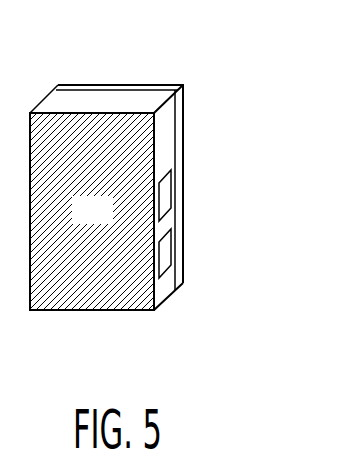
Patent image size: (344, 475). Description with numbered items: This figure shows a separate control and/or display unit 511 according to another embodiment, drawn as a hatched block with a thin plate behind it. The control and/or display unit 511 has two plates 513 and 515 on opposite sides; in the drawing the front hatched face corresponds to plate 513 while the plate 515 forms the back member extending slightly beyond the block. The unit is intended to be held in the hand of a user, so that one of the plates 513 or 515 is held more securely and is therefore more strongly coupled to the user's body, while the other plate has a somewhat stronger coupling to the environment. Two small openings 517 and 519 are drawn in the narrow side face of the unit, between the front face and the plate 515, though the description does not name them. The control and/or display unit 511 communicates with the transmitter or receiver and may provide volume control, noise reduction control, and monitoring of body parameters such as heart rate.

The control and/or display unit 511 is at (143, 310).
The plate 513 is at (153, 147).
The plate 515 is at (157, 84).
The upper slot 517 is at (165, 196).
The lower slot 519 is at (165, 257).